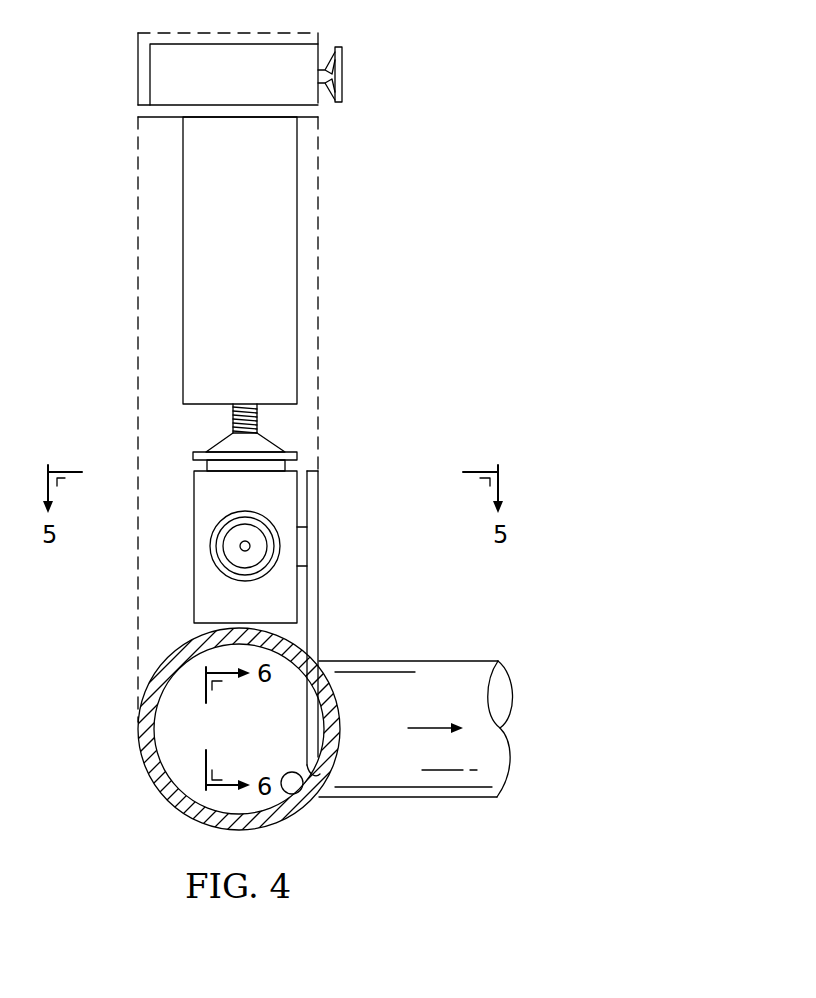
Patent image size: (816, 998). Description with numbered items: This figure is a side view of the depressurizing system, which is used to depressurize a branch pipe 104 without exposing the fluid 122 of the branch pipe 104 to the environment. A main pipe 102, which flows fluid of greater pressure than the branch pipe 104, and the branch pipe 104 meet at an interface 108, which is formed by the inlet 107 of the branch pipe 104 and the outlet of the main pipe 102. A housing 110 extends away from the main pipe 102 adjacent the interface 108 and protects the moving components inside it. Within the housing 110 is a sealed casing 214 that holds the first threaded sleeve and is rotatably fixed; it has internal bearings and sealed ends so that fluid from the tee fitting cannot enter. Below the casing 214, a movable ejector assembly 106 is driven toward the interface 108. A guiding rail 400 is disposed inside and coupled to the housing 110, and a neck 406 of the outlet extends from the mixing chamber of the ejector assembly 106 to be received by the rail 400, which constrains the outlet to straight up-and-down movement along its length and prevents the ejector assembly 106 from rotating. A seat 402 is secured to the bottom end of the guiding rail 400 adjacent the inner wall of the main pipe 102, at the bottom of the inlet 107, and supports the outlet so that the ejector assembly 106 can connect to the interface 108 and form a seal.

The main pipe 102 is at (143, 733).
The branch pipe 104 is at (432, 797).
The ejector assembly 106 is at (186, 534).
The inlet of the branch pipe 107 is at (340, 747).
The interface 108 is at (340, 710).
The housing 110 is at (132, 335).
The fluid 122 is at (432, 723).
The sealed casing 214 is at (297, 232).
The guiding rail 400 is at (318, 568).
The seat 402 is at (303, 812).
The neck 406 is at (302, 523).